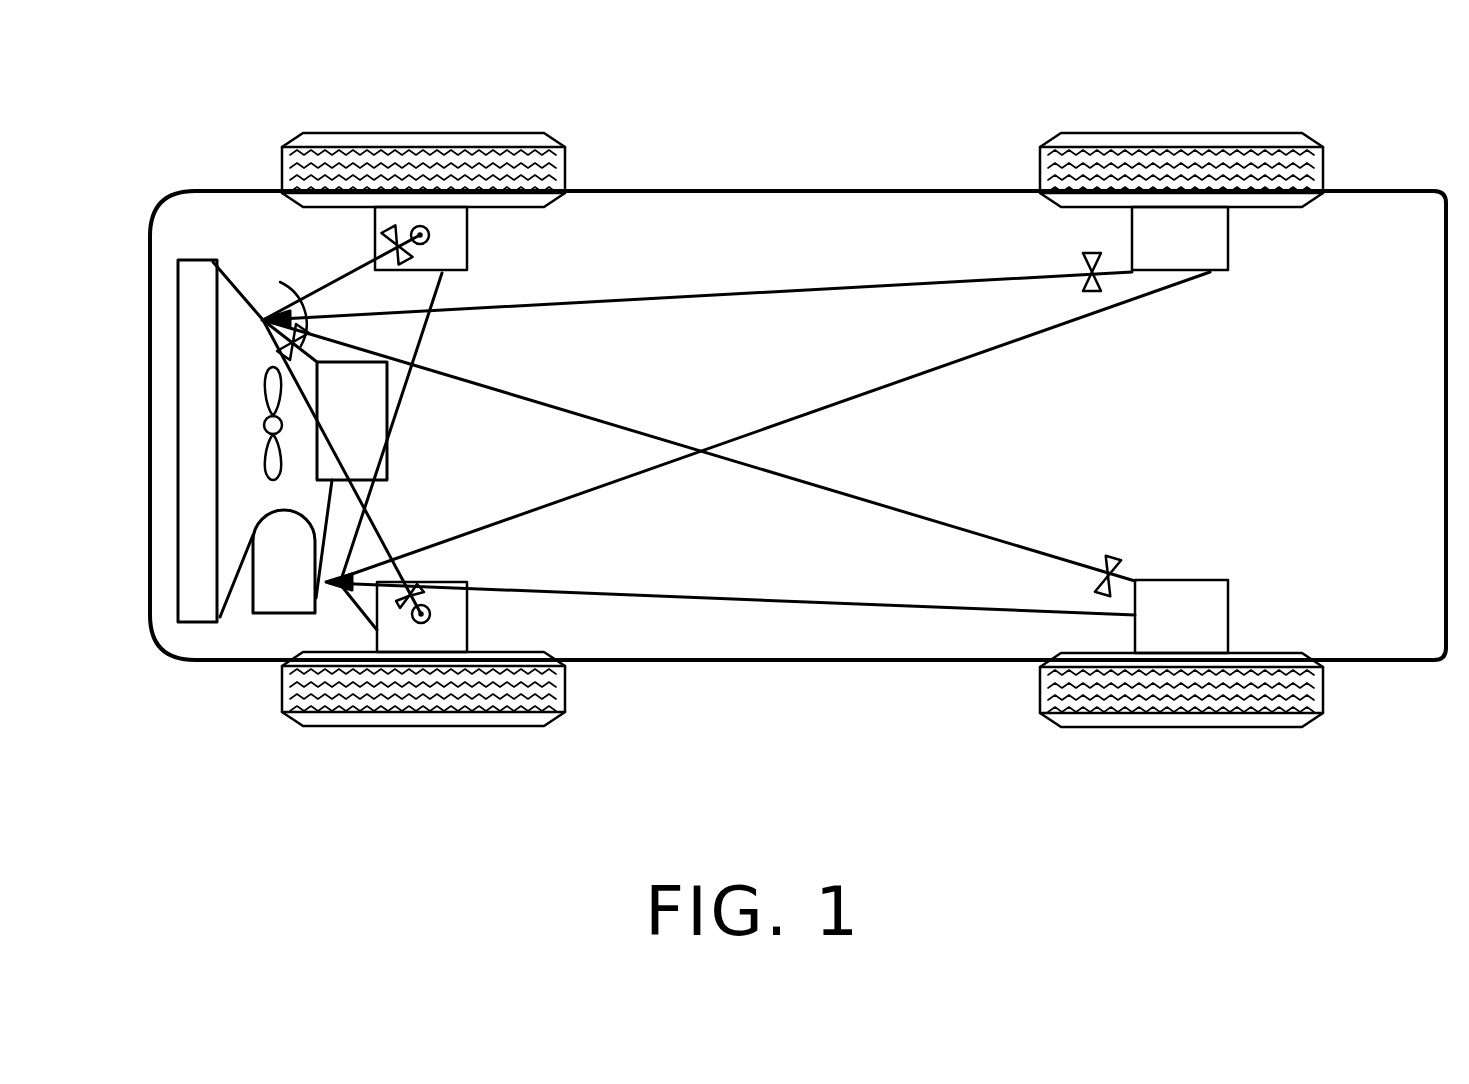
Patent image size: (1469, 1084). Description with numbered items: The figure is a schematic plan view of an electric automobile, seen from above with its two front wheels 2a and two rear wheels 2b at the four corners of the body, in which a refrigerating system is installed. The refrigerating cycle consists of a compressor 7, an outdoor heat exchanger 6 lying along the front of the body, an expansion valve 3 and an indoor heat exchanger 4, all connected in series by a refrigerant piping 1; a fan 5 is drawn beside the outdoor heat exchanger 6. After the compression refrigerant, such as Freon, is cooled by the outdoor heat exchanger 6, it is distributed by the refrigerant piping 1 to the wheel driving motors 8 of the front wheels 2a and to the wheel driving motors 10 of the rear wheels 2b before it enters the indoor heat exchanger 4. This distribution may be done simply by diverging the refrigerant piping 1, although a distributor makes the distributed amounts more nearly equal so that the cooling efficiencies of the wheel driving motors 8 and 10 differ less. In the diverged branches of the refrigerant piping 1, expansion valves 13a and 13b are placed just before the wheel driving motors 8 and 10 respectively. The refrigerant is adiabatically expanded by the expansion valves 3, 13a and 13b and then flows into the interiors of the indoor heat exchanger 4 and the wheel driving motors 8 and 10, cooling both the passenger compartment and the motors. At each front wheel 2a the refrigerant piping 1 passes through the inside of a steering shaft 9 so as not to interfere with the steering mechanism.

The refrigerant piping 1 is at (233, 282).
The front wheel 2a is at (460, 134).
The rear wheel 2b is at (1146, 134).
The expansion valve 3 is at (278, 301).
The indoor heat exchanger 4 is at (363, 421).
The fan 5 is at (266, 394).
The outdoor heat exchanger 6 is at (185, 450).
The compressor 7 is at (276, 528).
The wheel driving motor 8 is at (467, 225).
The steering shaft 9 is at (432, 241).
The wheel driving motor 10 is at (1228, 247).
The expansion valve 13a is at (383, 243).
The expansion valve 13b is at (1085, 286).